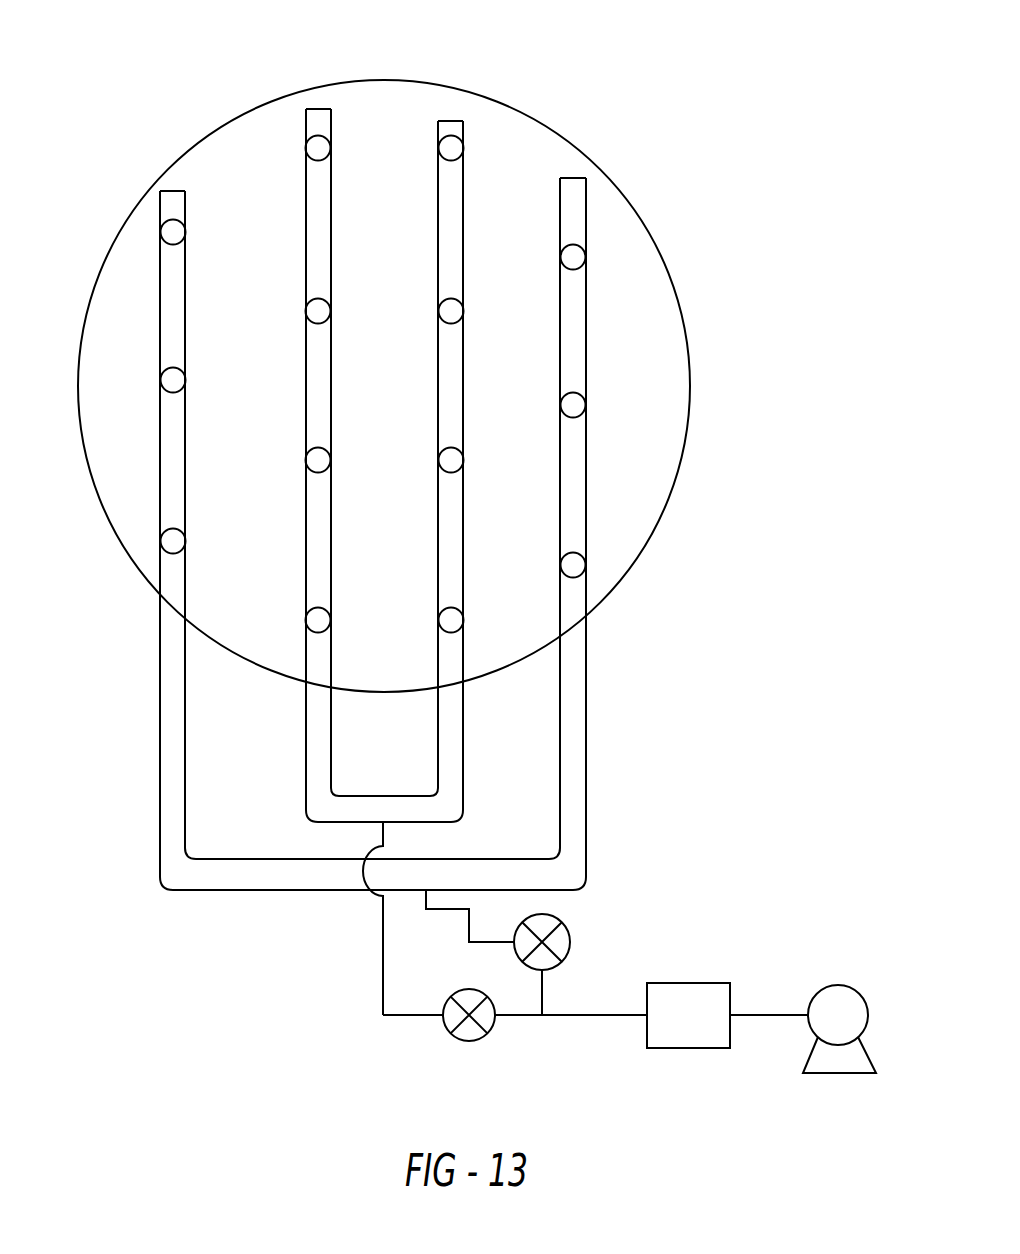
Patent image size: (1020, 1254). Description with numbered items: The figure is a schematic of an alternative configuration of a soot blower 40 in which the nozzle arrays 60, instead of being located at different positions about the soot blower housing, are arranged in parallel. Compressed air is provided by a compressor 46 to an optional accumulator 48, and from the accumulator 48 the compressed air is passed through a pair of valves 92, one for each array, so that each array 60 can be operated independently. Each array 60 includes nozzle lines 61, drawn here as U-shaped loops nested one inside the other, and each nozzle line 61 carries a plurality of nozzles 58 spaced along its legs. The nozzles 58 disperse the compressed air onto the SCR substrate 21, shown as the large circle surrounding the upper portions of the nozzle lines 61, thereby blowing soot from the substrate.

The soot blower 40 is at (195, 68).
The SCR substrate 21 is at (507, 147).
The nozzles 58 is at (170, 232).
The arrays 60 is at (483, 778).
The nozzle lines 61 is at (158, 746).
The valves 92 is at (570, 945).
The accumulator 48 is at (688, 983).
The compressor 46 is at (866, 998).